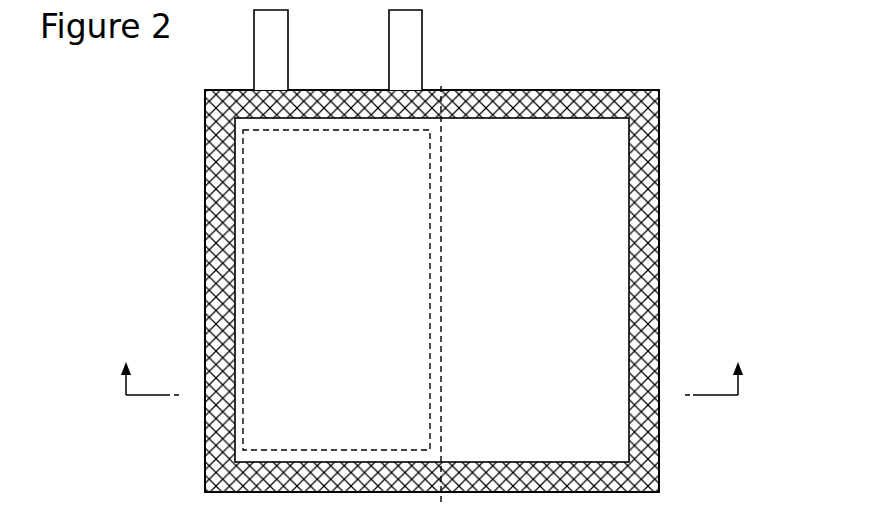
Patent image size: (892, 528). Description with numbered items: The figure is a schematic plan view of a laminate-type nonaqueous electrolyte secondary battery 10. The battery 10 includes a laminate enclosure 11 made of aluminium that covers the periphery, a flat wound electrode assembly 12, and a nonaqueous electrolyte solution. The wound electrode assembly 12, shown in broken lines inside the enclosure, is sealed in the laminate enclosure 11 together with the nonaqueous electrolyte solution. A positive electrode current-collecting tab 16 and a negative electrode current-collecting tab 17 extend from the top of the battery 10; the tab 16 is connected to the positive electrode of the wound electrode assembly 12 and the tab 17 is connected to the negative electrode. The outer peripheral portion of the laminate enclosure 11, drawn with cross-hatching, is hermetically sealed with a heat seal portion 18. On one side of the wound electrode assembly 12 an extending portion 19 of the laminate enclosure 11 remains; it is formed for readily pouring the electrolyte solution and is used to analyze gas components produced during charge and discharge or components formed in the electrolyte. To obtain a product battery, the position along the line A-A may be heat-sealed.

The nonaqueous electrolyte secondary battery 10 is at (163, 79).
The laminate enclosure 11 is at (660, 168).
The wound electrode assembly 12 is at (284, 197).
The positive electrode current-collecting tab 16 is at (278, 36).
The negative electrode current-collecting tab 17 is at (413, 36).
The heat seal portion 18 is at (652, 104).
The extending portion 19 is at (513, 163).